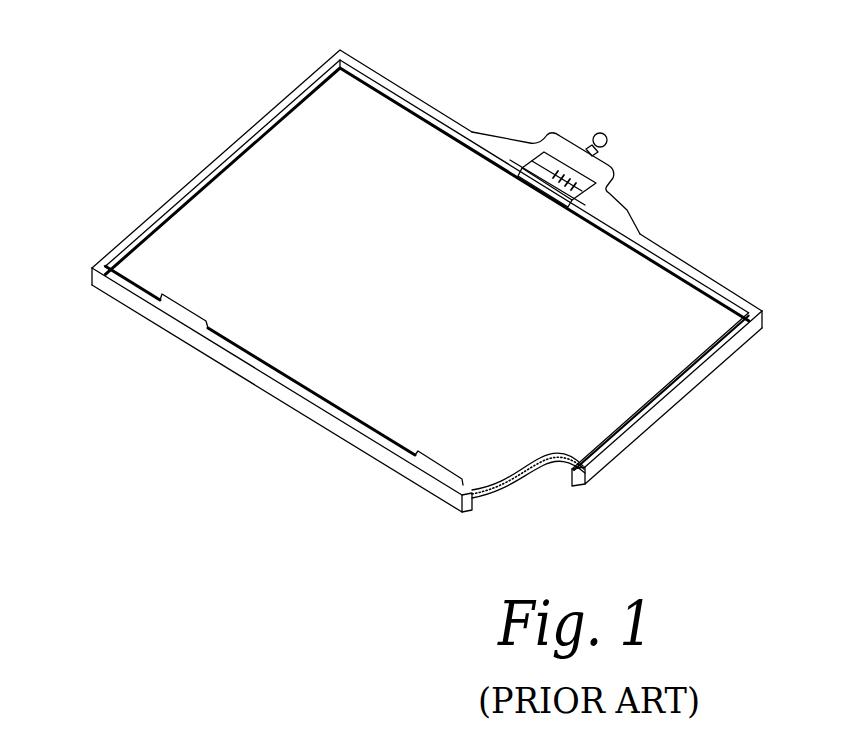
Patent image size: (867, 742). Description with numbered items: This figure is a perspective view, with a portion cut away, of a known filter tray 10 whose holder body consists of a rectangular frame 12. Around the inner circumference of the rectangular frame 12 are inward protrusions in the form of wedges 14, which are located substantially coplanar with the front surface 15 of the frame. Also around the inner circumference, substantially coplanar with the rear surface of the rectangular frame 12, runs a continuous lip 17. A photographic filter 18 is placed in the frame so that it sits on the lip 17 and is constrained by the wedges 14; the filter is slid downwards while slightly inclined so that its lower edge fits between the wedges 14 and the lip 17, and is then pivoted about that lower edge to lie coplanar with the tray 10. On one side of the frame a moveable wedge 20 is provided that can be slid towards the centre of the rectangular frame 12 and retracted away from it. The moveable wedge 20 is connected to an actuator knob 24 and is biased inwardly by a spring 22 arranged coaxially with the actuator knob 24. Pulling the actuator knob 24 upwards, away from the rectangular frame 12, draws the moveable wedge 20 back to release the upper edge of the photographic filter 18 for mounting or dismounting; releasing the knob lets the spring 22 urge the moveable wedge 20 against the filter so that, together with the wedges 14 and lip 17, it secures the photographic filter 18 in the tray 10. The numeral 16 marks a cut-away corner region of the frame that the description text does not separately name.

The filter tray 10 is at (252, 460).
The rectangular frame 12 is at (700, 367).
The wedges 14 is at (183, 320).
The front surface 15 is at (128, 232).
The corner of side wall 16 is at (466, 518).
The continuous lip 17 is at (477, 512).
The photographic filter 18 is at (267, 178).
The moveable wedge 20 is at (520, 178).
The spring 22 is at (578, 177).
The actuator knob 24 is at (612, 138).